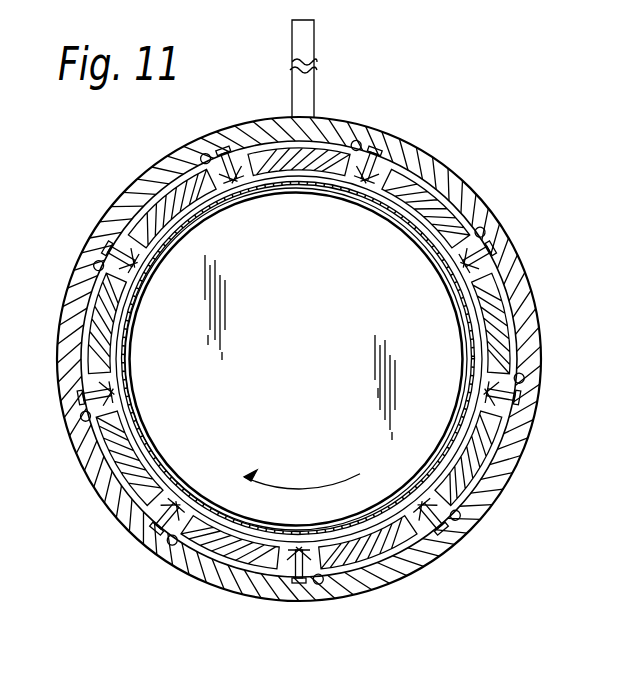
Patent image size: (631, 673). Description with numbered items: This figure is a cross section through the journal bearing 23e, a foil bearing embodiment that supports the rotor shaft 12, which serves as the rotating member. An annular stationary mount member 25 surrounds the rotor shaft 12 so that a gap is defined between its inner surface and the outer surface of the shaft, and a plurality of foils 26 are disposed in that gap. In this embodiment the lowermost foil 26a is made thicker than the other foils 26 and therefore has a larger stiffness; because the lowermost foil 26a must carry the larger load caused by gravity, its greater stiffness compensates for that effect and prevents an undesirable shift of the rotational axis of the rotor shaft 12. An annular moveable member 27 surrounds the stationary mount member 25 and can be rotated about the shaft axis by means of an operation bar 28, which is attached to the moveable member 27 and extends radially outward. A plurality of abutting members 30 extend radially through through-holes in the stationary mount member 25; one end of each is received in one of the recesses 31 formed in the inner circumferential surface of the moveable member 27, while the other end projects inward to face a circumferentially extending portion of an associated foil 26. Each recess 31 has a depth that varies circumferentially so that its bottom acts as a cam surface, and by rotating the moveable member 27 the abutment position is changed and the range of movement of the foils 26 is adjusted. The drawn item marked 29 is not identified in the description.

The rotor shaft 12 is at (311, 393).
The journal bearing 23e is at (470, 80).
The stationary mount member 25 is at (503, 340).
The foils 26 is at (172, 208).
The lowermost foil 26a is at (384, 567).
The moveable member 27 is at (502, 466).
The operation bar 28 is at (316, 40).
The retaining ring 29 is at (490, 290).
The abutting members 30 is at (512, 390).
The recesses 31 is at (490, 232).